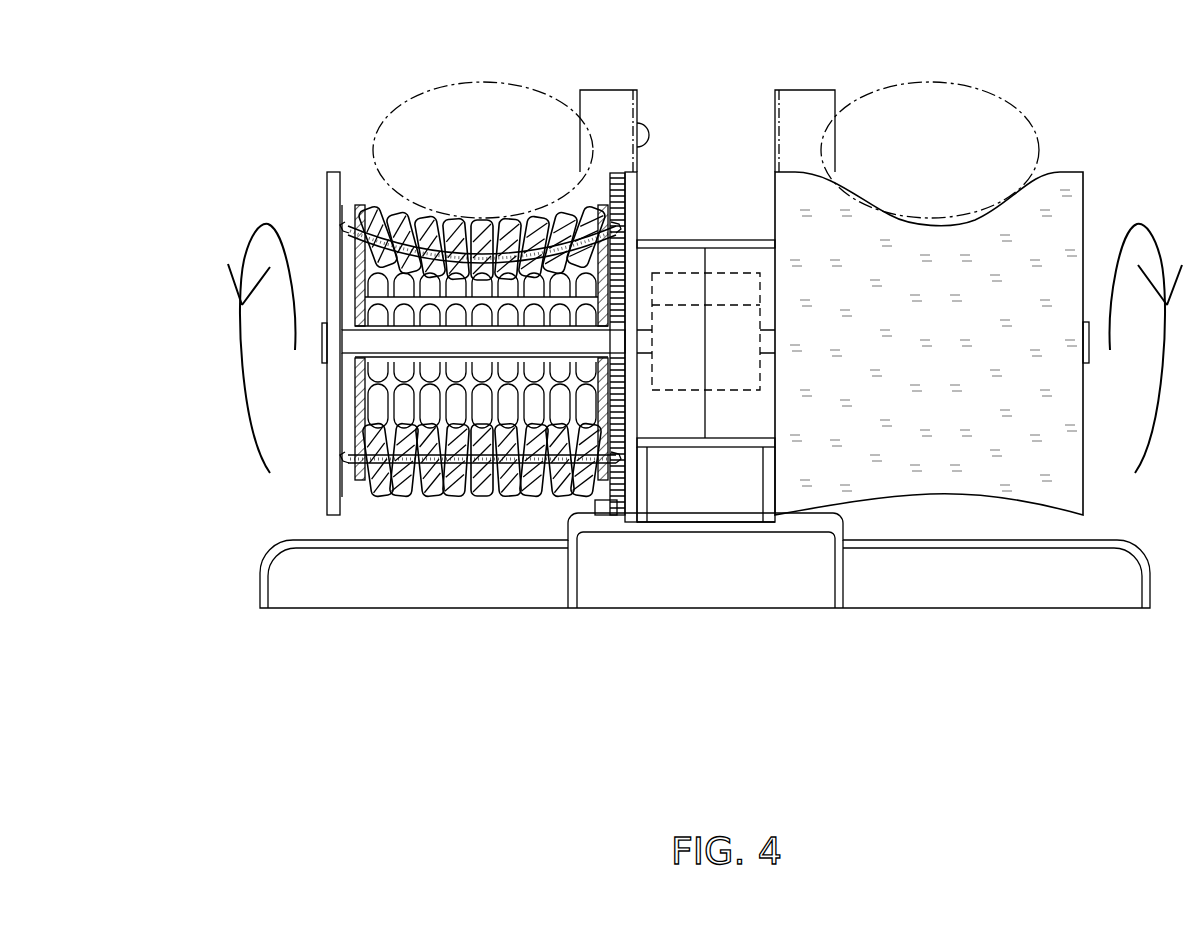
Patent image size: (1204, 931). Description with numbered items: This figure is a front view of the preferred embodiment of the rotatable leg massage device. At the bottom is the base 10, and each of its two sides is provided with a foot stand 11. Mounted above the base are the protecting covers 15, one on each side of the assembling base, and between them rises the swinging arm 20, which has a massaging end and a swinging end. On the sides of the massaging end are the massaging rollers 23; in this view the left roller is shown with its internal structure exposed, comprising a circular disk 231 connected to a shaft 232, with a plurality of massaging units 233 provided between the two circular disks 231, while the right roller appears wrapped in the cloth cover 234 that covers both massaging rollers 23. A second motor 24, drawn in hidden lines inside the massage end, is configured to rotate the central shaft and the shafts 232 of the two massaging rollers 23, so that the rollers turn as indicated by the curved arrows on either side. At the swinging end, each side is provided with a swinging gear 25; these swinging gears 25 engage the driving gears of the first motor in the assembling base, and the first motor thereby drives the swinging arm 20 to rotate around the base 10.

The base 10 is at (723, 617).
The foot stand 11 is at (972, 578).
The protecting cover 15 is at (805, 110).
The swinging arm 20 is at (706, 294).
The massaging roller 23 is at (397, 357).
The second motor 24 is at (727, 283).
The swinging gear 25 is at (603, 505).
The circular disk 231 is at (330, 172).
The shaft 232 is at (463, 353).
The massaging unit 233 is at (413, 207).
The cloth cover 234 is at (1060, 185).